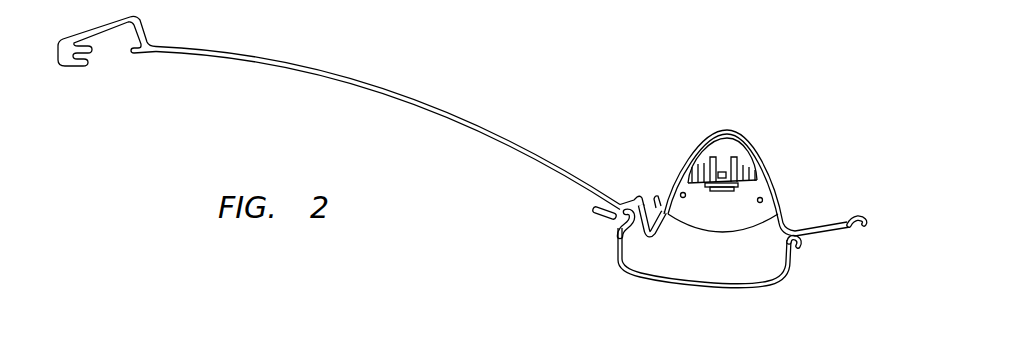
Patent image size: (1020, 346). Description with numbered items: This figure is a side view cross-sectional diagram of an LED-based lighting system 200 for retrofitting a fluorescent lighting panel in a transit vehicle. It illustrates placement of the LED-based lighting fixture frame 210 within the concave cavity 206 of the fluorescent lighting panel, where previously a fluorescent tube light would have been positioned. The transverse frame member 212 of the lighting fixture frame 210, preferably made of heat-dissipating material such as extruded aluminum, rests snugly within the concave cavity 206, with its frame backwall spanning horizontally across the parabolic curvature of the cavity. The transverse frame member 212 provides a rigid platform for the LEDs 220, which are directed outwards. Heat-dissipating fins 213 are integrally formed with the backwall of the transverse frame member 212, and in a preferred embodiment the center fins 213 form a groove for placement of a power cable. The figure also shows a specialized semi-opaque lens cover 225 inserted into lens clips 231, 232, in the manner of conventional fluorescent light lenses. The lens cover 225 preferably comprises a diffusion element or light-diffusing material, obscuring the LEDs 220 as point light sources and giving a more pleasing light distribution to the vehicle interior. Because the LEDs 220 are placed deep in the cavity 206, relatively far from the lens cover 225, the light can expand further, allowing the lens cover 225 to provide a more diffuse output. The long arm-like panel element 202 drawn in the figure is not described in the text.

The LED-based lighting system 200 is at (461, 197).
The support arm 202 is at (417, 100).
The concave cavity 206 is at (759, 153).
The LED-based lighting fixture frame 210 is at (750, 210).
The transverse frame member 212 is at (679, 166).
The heat-dissipating fins 213 is at (729, 151).
The LEDs 220 is at (722, 192).
The lens cover 225 is at (728, 290).
The lens clip 231 is at (606, 219).
The lens clip 232 is at (804, 250).